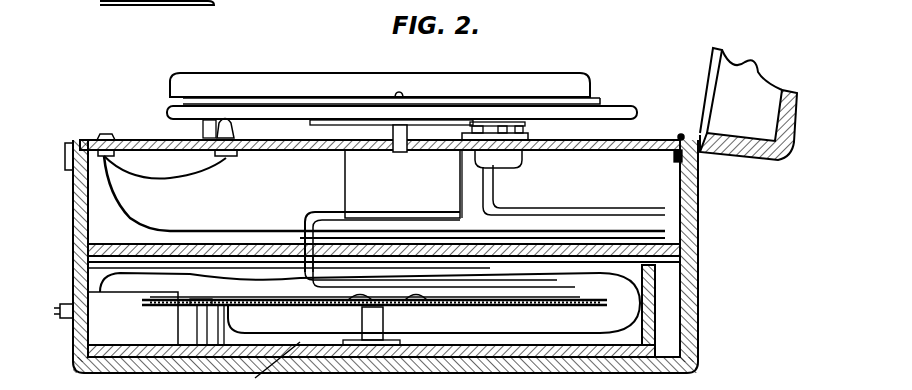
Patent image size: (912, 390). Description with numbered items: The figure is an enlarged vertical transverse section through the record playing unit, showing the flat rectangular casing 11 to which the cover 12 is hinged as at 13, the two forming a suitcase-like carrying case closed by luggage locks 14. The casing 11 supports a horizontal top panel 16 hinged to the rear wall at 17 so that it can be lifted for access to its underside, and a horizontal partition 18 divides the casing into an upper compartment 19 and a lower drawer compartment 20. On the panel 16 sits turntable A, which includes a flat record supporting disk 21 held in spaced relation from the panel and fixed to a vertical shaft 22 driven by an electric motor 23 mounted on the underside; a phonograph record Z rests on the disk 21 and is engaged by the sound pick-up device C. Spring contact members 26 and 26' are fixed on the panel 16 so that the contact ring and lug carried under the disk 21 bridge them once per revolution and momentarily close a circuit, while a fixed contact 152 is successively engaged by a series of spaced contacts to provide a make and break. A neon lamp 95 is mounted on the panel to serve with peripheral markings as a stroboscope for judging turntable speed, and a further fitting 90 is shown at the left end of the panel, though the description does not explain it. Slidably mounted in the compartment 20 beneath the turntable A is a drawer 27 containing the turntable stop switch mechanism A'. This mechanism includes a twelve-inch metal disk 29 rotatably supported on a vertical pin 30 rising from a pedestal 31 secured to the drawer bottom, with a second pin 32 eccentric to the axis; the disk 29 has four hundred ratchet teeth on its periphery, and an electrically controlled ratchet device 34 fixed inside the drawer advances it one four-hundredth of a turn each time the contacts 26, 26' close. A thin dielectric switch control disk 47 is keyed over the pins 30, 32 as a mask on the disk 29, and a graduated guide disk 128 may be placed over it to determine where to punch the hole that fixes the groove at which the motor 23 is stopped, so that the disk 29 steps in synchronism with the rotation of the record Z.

The casing 11 is at (698, 250).
The cover 12 is at (744, 72).
The hinge 13 is at (700, 152).
The locks 14 is at (65, 152).
The top panel 16 is at (632, 145).
The hinge 17 is at (680, 132).
The horizontal partition 18 is at (250, 248).
The upper compartment 19 is at (527, 184).
The lower drawer compartment 20 is at (670, 305).
The record supporting disk 21 is at (167, 112).
The vertical shaft 22 is at (395, 130).
The electric motor 23 is at (402, 184).
The spring contact member 26 is at (508, 91).
The spring contact member 26' is at (495, 91).
The drawer 27 is at (75, 336).
The metal disk 29 is at (503, 306).
The vertical pin 30 is at (355, 302).
The pedestal 31 is at (370, 327).
The second pin 32 is at (425, 302).
The electrically controlled ratchet device 34 is at (100, 307).
The switch control disk 47 is at (607, 303).
The clamp 90 is at (106, 133).
The neon lamp 95 is at (226, 120).
The master or guide disk 128 is at (572, 297).
The fixed contact 152 is at (521, 126).
The turntable A is at (399, 65).
The turntable stop switch mechanism A' is at (272, 366).
The sound pick-up device C is at (382, 77).
The phonograph record Z is at (605, 103).